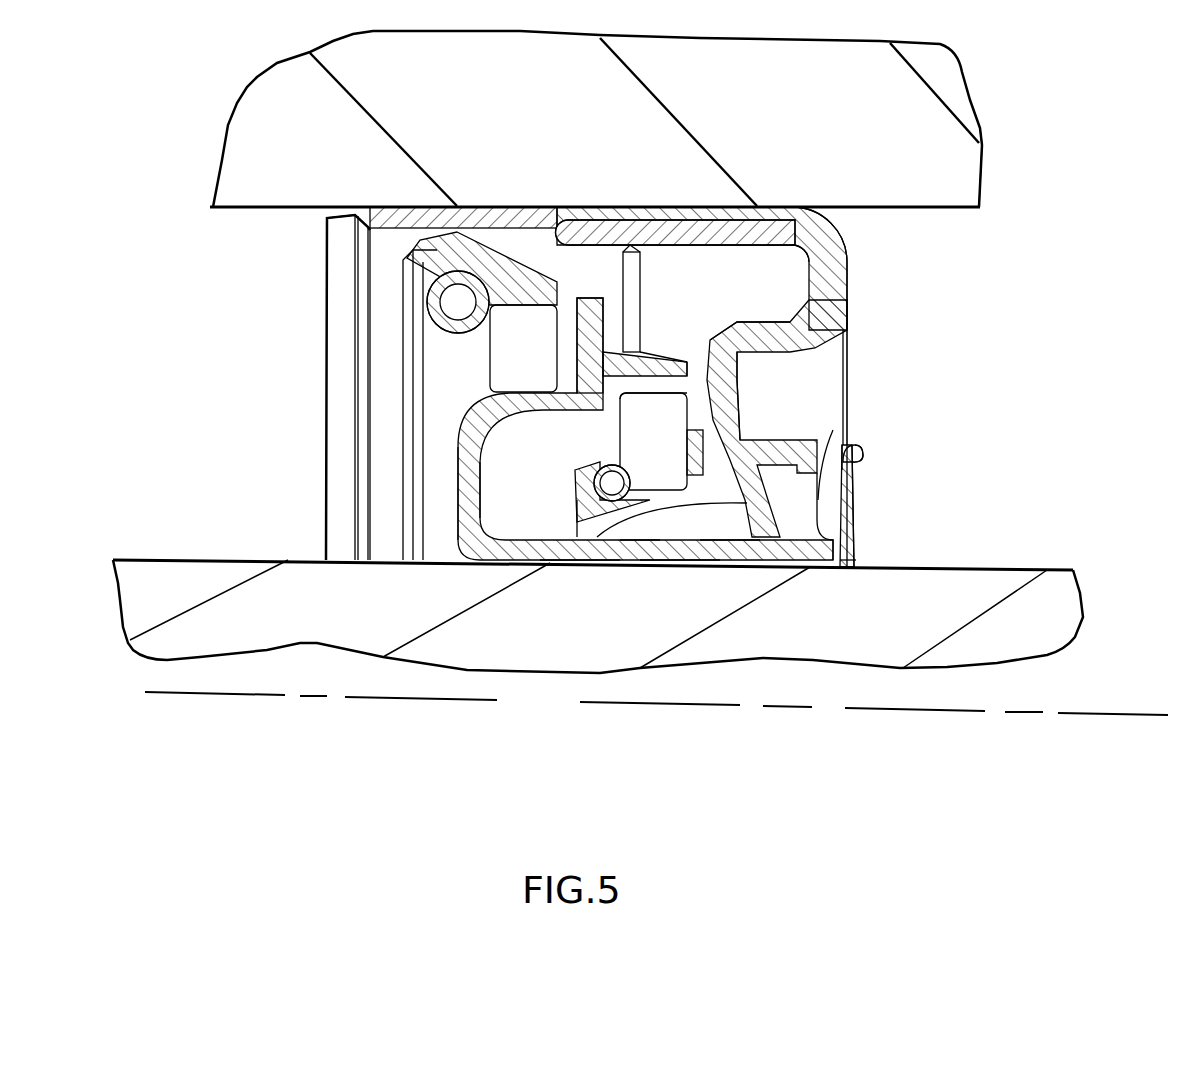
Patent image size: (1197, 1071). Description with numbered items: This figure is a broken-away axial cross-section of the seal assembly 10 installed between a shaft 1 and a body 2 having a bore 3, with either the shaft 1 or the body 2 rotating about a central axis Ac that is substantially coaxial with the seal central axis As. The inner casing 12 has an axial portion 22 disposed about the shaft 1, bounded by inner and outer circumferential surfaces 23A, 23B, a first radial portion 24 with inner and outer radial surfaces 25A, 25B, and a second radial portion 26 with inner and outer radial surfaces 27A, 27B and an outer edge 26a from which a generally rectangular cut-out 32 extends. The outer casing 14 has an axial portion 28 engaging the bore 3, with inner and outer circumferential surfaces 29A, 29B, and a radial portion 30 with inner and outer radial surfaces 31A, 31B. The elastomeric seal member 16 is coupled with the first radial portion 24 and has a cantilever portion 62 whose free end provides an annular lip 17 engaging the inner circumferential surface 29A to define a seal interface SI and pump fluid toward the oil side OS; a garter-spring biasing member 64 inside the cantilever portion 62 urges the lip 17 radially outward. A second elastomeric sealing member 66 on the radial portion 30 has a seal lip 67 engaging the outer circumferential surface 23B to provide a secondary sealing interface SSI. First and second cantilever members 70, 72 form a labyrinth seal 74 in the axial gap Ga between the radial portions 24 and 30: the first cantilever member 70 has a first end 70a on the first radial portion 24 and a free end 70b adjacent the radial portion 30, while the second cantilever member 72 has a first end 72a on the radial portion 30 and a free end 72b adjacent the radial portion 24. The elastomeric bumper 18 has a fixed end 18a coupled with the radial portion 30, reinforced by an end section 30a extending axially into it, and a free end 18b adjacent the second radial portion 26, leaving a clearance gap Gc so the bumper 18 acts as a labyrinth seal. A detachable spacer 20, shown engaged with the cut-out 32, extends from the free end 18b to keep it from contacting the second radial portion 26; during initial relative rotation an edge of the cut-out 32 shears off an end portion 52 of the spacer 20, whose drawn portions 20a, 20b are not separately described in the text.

The shaft 1 is at (172, 558).
The body 2 is at (232, 122).
The bore 3 is at (958, 214).
The seal assembly 10 is at (214, 272).
The inner casing 12 is at (578, 570).
The outer casing 14 is at (592, 186).
The elastomeric seal member 16 is at (386, 290).
The annular lip 17 is at (455, 242).
The bumper 18 is at (832, 427).
The fixed end 18a is at (755, 432).
The free end 18b is at (836, 562).
The detachable spacer 20 is at (868, 451).
The sleeve portion 20a is at (805, 516).
The sleeve lip 20b is at (854, 466).
The axial portion 22 is at (682, 570).
The inner circumferential surface 23A is at (633, 568).
The outer circumferential surface 23B is at (730, 568).
The first radial portion 24 is at (456, 428).
The inner radial surface 25A is at (483, 490).
The outer radial surface 25B is at (470, 463).
The second radial portion 26 is at (855, 536).
The outer edge 26a is at (850, 446).
The inner radial surface 27A is at (845, 496).
The outer radial surface 27B is at (845, 526).
The axial portion 28 is at (659, 210).
The inner circumferential surface 29A is at (766, 207).
The outer circumferential surface 29B is at (710, 207).
The radial portion 30 is at (852, 288).
The end section 30a is at (778, 452).
The inner radial surface 31A is at (806, 298).
The outer radial surface 31B is at (845, 320).
The cut-out 32 is at (858, 462).
The end portion 52 is at (862, 452).
The cantilever portion 62 is at (556, 278).
The biasing member 64 is at (486, 246).
The second elastomeric sealing member 66 is at (586, 479).
The annular seal lip 67 is at (582, 520).
The first cantilever member 70 is at (655, 352).
The first end 70a is at (610, 349).
The lip member portion 70b is at (690, 346).
The second cantilever member 72 is at (657, 415).
The first end 72a is at (775, 383).
The free end 72b is at (628, 397).
The labyrinth seal 74 is at (692, 332).
The axial gap Ga is at (679, 350).
The clearance gap Gc is at (846, 450).
The oil side OS is at (232, 393).
The seal interface SI is at (452, 207).
The secondary sealing interface SSI is at (600, 570).
The central axis Ac is at (662, 688).
The central axis As is at (1105, 712).